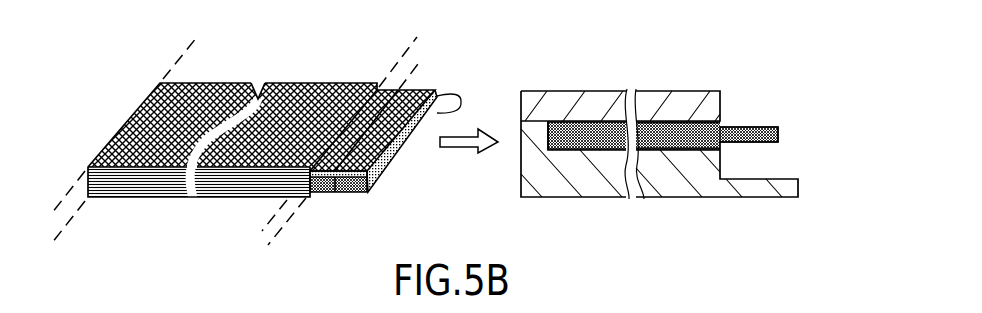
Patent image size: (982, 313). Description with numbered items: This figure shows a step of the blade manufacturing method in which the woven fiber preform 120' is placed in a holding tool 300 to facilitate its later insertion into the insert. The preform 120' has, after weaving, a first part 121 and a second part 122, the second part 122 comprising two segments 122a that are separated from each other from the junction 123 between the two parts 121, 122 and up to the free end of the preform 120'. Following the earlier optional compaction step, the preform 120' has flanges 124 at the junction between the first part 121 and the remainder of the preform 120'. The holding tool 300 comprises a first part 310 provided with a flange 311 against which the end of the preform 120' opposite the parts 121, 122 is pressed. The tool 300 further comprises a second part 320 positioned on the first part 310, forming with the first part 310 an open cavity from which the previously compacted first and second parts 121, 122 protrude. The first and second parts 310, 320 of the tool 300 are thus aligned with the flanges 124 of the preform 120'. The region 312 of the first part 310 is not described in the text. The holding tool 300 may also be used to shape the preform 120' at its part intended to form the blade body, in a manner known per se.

The fiber preform 120' is at (404, 118).
The first part 121 is at (335, 194).
The second part 122 is at (335, 194).
The segments 122a is at (469, 104).
The junction 123 is at (383, 172).
The flanges 124 is at (378, 90).
The holding tool 300 is at (731, 74).
The first part of the holding tool 310 is at (659, 178).
The flange 311 is at (570, 151).
The right part of base body 312 is at (657, 153).
The second part of the holding tool 320 is at (682, 102).